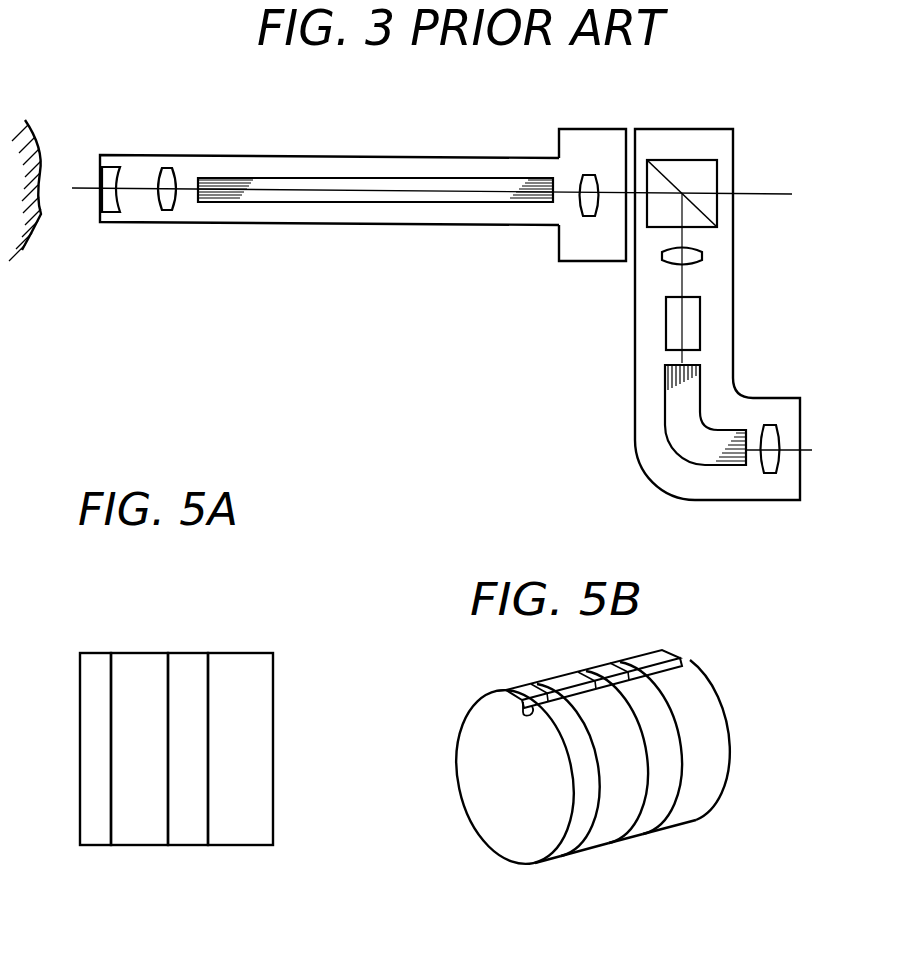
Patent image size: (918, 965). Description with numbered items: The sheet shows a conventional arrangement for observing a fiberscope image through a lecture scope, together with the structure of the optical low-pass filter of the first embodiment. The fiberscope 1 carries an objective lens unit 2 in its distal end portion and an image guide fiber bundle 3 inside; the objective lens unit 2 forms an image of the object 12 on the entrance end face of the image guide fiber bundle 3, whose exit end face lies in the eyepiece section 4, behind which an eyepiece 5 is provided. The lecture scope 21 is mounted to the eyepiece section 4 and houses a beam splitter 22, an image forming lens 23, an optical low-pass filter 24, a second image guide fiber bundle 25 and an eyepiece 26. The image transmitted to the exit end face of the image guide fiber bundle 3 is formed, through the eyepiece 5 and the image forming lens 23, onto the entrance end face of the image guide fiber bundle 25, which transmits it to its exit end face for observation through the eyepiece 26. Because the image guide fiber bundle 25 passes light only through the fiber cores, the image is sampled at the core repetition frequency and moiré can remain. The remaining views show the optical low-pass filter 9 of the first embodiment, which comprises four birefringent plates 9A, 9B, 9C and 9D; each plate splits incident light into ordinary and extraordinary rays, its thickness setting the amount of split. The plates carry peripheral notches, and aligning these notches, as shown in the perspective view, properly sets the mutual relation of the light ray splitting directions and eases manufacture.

In FIG. 3, the fiberscope 1 is at (287, 132).
In FIG. 3, the objective lens unit 2 is at (188, 229).
In FIG. 3, the image guide fiber bundle 3 is at (327, 195).
In FIG. 3, the eyepiece section 4 is at (580, 127).
In FIG. 3, the eyepiece 5 is at (578, 207).
In FIG. 3, the object 12 is at (33, 217).
In FIG. 3, the lecture scope 21 is at (684, 112).
In FIG. 3, the beam splitter 22 is at (712, 177).
In FIG. 3, the image forming lens 23 is at (700, 255).
In FIG. 3, the optical low-pass filter 24 is at (692, 330).
In FIG. 3, the image guide fiber bundle 25 is at (687, 455).
In FIG. 3, the eyepiece 26 is at (770, 472).
In FIG. 5A, the optical low-pass filter 9 is at (290, 597).
In FIG. 5A, the birefringent plate 9A is at (90, 658).
In FIG. 5B, the birefringent plate 9A is at (500, 842).
In FIG. 5A, the birefringent plate 9B is at (138, 658).
In FIG. 5B, the birefringent plate 9B is at (600, 840).
In FIG. 5A, the birefringent plate 9C is at (185, 658).
In FIG. 5B, the birefringent plate 9C is at (645, 822).
In FIG. 5A, the birefringent plate 9D is at (237, 660).
In FIG. 5B, the birefringent plate 9D is at (702, 805).